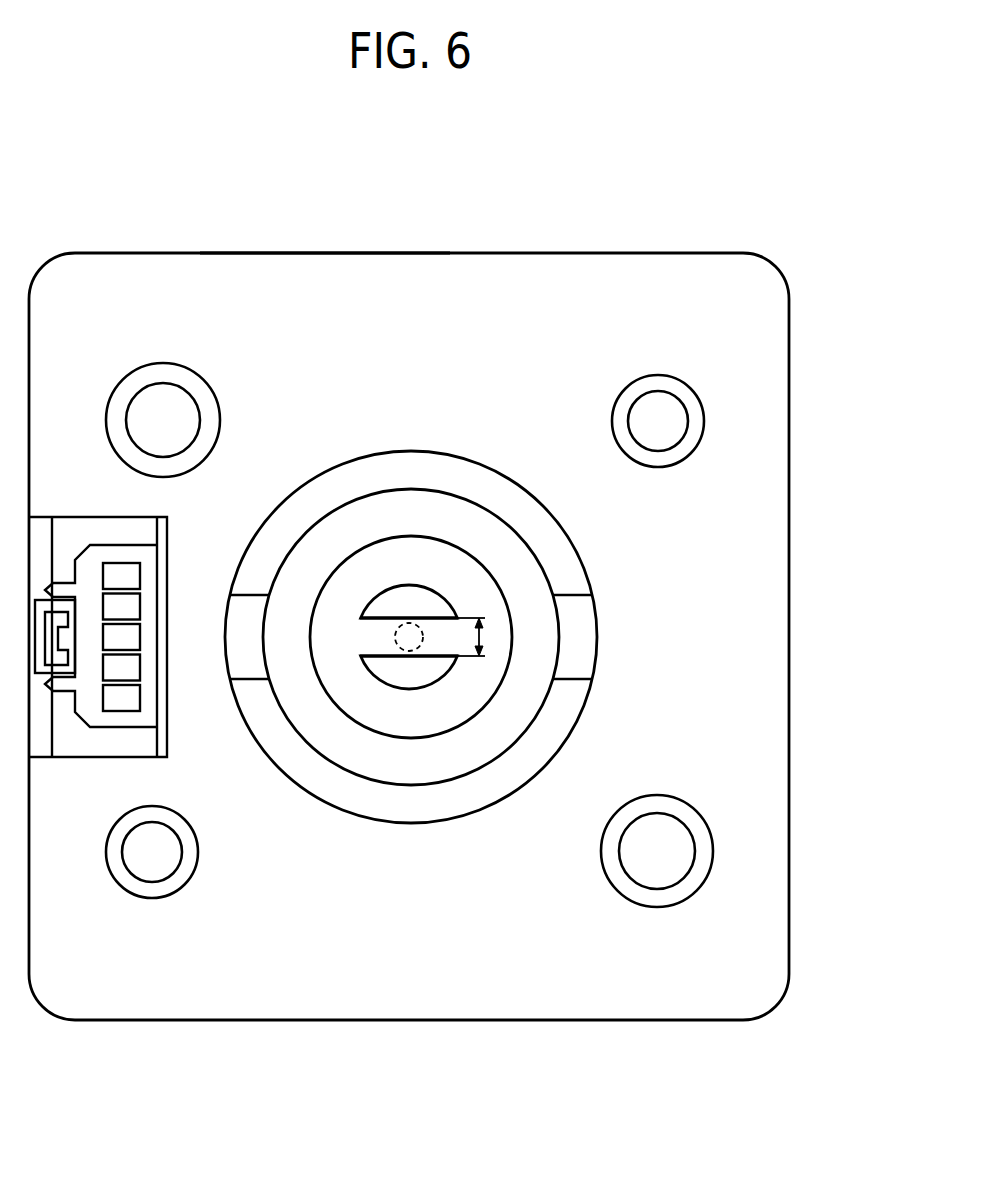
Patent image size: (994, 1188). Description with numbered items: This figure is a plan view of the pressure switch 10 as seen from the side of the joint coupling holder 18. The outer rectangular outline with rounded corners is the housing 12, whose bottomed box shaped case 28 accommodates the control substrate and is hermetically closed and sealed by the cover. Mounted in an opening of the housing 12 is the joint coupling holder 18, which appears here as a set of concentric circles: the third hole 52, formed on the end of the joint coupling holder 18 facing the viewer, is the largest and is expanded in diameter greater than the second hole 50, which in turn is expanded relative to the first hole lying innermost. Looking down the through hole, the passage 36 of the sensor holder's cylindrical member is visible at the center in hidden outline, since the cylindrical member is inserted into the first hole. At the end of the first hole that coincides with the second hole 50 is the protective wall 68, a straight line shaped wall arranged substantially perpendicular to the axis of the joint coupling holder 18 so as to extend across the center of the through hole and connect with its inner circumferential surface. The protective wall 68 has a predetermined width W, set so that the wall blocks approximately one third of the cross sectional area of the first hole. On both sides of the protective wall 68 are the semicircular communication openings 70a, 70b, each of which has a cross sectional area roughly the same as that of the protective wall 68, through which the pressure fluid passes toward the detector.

The pressure switch 10 is at (675, 167).
The housing 12 is at (790, 359).
The joint coupling holder 18 is at (326, 800).
The case 28 is at (328, 268).
The passage 36 is at (395, 636).
The second hole 50 is at (493, 578).
The third hole 52 is at (462, 511).
The protective wall 68 is at (442, 638).
The communication opening 70a is at (413, 674).
The communication opening 70b is at (413, 598).
The width W is at (486, 637).